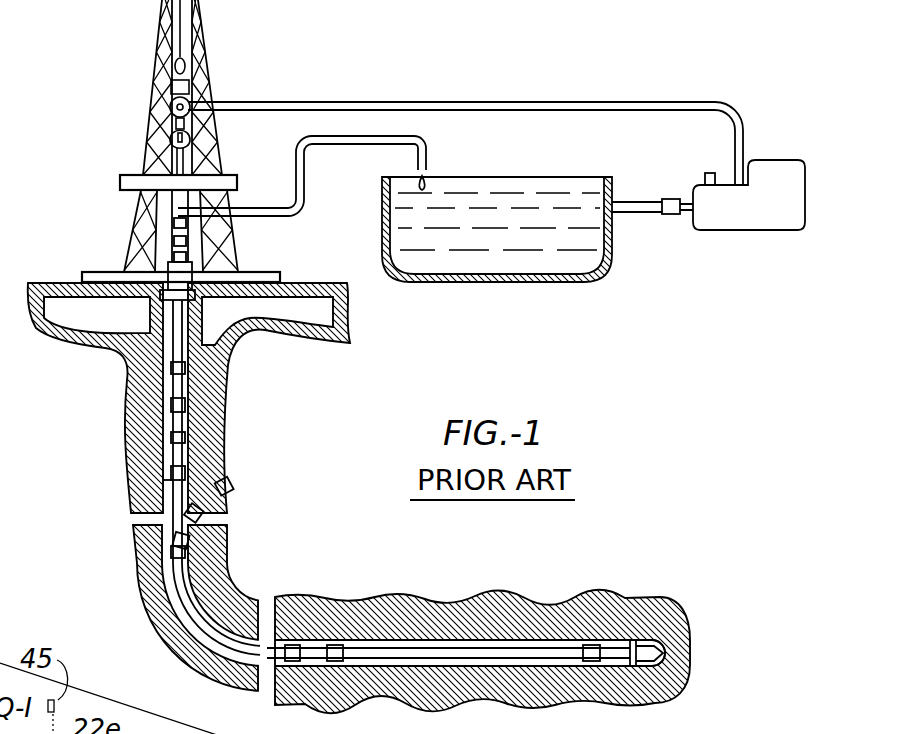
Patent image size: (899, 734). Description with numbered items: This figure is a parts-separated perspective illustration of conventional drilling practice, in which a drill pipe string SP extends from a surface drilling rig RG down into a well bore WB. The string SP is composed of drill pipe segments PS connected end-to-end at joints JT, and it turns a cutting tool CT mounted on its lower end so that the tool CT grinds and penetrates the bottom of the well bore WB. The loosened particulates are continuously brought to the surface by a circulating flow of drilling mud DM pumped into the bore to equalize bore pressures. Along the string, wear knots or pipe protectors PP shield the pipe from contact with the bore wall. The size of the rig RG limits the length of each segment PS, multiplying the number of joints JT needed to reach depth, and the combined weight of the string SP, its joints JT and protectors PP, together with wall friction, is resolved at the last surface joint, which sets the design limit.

The drilling rig RG is at (200, 22).
The drill pipe segment PS is at (190, 165).
The drilling mud DM is at (483, 192).
The well bore WB is at (183, 422).
The joint JT is at (190, 367).
The pipe protector PP is at (171, 438).
The drill pipe string SP is at (197, 490).
The cutting tool CT is at (660, 640).